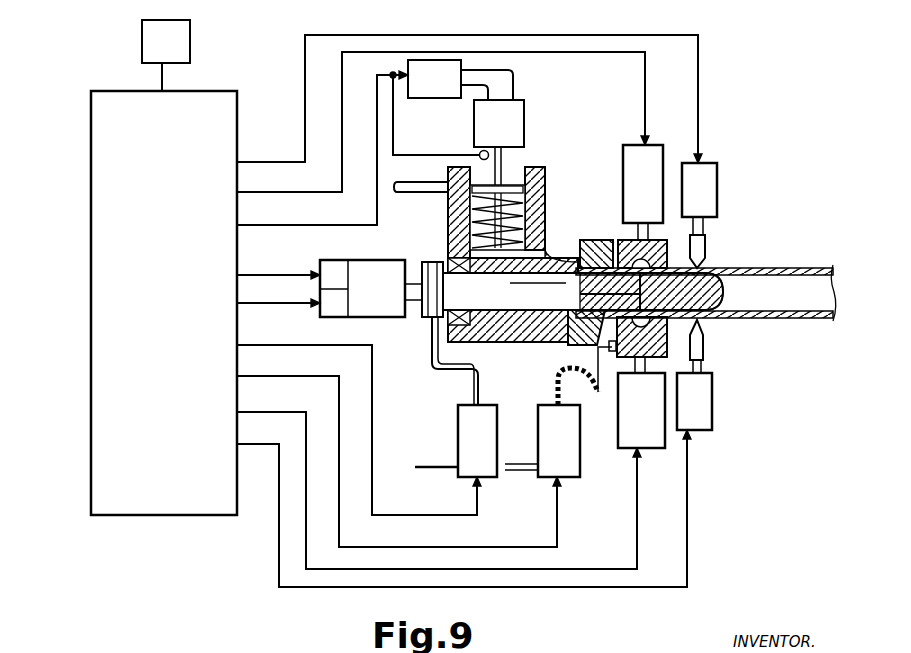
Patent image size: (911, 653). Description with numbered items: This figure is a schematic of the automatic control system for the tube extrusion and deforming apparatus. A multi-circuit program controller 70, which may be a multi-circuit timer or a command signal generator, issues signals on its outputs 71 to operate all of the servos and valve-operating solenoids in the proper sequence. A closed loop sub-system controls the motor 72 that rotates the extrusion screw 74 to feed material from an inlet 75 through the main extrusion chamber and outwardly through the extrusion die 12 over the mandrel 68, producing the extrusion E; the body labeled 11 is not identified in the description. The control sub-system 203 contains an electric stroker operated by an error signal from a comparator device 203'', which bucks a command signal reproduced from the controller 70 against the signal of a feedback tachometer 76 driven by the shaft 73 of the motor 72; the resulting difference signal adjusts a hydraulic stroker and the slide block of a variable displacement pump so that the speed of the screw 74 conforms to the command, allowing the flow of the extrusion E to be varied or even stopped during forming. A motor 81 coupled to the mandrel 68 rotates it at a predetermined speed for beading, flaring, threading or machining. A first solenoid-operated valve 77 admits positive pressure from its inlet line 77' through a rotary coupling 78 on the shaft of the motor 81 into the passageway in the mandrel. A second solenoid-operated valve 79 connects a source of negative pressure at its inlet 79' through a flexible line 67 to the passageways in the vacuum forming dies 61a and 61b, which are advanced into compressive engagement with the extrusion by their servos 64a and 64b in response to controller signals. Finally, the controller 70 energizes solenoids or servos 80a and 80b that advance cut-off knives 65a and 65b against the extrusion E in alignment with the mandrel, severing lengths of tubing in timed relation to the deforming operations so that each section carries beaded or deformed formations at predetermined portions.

The multi-circuit program controller 70 is at (95, 94).
The outputs 71 is at (285, 157).
The comparator device 203'' is at (432, 38).
The control sub-system 203 is at (460, 80).
The motor 72 is at (519, 103).
The shaft 73 is at (503, 160).
The feedback tachometer 76 is at (478, 152).
The valve housing 11 is at (530, 170).
The extrusion die 12 is at (585, 246).
The extrusion screw 74 is at (527, 208).
The inlet 75 is at (412, 195).
The mandrel 68 is at (725, 293).
The extrusion E is at (812, 250).
The vacuum forming die 61a is at (622, 240).
The vacuum forming die 61b is at (620, 357).
The servo 64a is at (626, 148).
The servo 64b is at (628, 441).
The solenoid or servo 80a is at (708, 176).
The solenoid or servo 80b is at (703, 399).
The cut-off knife 65a is at (708, 243).
The cut-off knife 65b is at (703, 345).
The rotary coupling 78 is at (425, 318).
The mandrel rotating motor 81 is at (364, 301).
The first solenoid-operated valve 77 is at (454, 431).
The inlet line 77' is at (435, 484).
The second solenoid-operated valve 79 is at (539, 427).
The inlet 79' is at (522, 452).
The flexible line 67 is at (558, 372).